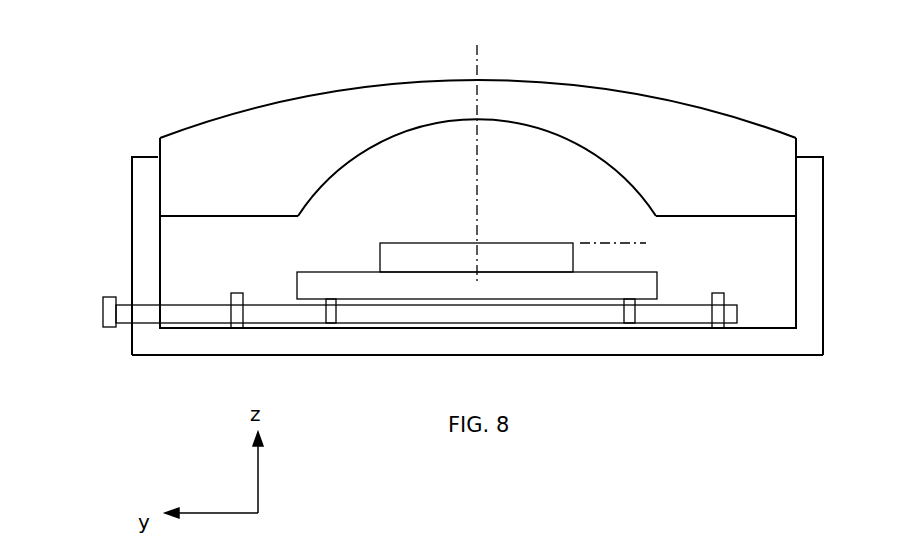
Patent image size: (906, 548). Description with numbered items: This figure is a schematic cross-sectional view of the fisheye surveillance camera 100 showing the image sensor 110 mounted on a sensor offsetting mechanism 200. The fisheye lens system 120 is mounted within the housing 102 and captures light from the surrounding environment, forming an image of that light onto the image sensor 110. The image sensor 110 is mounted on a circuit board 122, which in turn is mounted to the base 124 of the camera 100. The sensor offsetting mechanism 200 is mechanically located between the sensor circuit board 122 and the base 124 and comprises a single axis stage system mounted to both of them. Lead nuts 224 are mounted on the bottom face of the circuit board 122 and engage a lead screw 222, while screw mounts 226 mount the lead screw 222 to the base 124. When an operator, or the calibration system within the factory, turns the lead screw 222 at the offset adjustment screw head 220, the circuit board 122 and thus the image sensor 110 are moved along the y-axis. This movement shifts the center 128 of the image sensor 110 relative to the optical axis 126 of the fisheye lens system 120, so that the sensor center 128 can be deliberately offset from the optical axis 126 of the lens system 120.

The fisheye camera 100 is at (216, 59).
The housing 102 is at (131, 178).
The image sensor 110 is at (554, 243).
The fisheye lens system 120 is at (478, 191).
The circuit board 122 is at (647, 272).
The base 124 is at (744, 355).
The optical axis 126 is at (475, 94).
The center of the image sensor 128 is at (475, 205).
The sensor offsetting mechanism 200 is at (746, 302).
The offset adjustment screw head 220 is at (108, 327).
The lead screw 222 is at (432, 323).
The lead nuts 224 is at (335, 325).
The screw mounts 226 is at (230, 300).